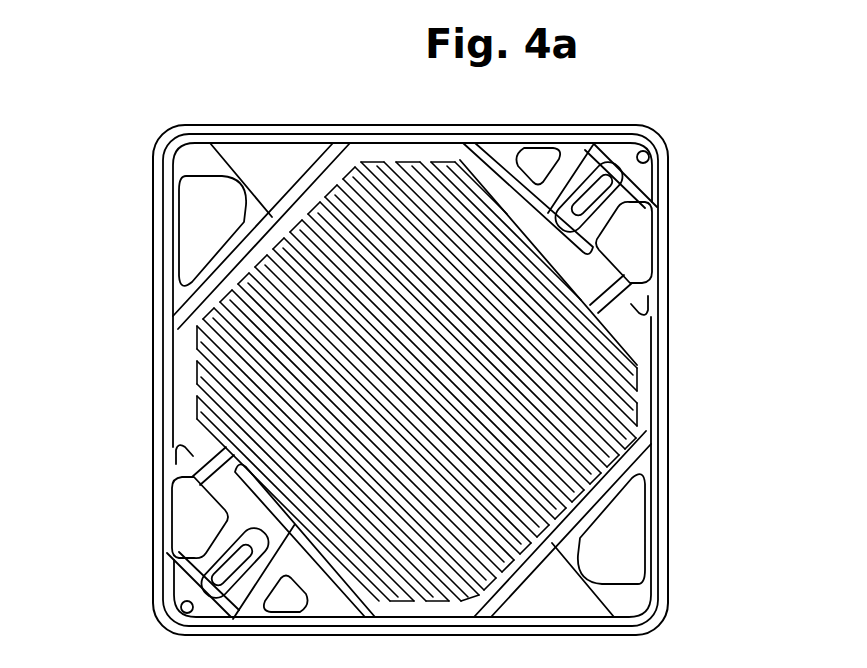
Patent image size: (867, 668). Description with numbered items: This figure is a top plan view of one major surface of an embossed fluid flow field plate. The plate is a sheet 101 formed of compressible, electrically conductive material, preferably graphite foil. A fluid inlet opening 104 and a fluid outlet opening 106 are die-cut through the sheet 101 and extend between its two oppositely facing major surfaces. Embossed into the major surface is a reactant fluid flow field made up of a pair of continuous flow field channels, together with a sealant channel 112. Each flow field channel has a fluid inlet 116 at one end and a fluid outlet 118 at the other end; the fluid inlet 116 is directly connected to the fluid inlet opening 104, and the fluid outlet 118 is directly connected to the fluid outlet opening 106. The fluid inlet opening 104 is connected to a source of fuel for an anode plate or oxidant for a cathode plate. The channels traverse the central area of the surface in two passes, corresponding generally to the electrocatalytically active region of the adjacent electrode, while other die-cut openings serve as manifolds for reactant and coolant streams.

The sheet 101 is at (670, 163).
The fluid inlet opening 104 is at (642, 247).
The fluid outlet opening 106 is at (190, 541).
The sealant channel 112 is at (362, 137).
The fluid inlet 116 is at (645, 310).
The fluid outlet 118 is at (212, 492).